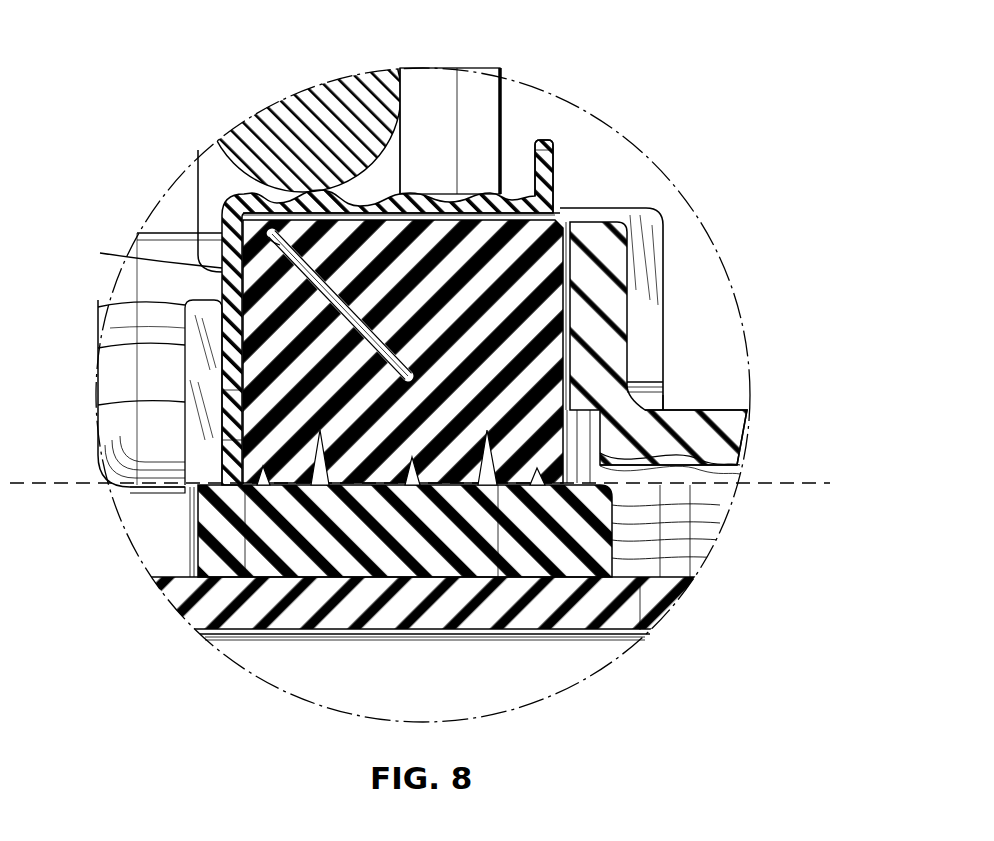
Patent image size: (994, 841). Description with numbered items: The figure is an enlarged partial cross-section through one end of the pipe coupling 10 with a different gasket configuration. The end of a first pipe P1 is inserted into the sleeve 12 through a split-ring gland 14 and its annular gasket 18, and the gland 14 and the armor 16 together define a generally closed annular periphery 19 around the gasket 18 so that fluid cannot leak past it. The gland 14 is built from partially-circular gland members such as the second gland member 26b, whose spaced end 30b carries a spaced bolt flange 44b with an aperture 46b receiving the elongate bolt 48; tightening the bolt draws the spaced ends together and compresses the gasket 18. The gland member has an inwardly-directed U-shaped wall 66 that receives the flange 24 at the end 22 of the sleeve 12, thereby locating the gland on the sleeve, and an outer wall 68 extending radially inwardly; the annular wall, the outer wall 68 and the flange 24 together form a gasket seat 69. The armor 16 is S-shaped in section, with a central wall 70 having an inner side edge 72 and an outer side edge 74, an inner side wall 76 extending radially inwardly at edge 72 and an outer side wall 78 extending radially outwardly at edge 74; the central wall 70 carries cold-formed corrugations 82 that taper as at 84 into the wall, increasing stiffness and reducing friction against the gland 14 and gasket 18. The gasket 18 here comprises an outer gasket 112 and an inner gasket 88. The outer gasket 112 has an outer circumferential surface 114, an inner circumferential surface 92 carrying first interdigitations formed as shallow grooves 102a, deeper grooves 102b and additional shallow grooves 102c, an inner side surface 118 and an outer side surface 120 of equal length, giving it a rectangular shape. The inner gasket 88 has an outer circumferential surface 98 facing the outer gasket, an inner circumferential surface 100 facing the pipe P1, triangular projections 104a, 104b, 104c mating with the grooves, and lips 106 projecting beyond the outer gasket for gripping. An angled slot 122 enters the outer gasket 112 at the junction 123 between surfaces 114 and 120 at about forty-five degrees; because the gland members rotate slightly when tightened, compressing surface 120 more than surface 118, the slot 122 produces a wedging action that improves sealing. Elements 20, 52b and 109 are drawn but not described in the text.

The pipe coupling 10 is at (118, 168).
The sleeve 12 is at (732, 405).
The split-ring gland 14 is at (128, 494).
The armor 16 is at (560, 150).
The annular gasket 18 is at (191, 610).
The closed annular periphery 19 is at (328, 215).
The housing wall 20 is at (738, 428).
The end of the sleeve 22 is at (640, 395).
The flange 24 is at (610, 312).
The second partially-circular gland member 26b is at (180, 450).
The spaced end 30b is at (183, 343).
The spaced bolt flange 44b is at (478, 95).
The aperture 46b is at (200, 178).
The elongate bolt 48 is at (300, 95).
The stud surface 52b is at (163, 368).
The U-shaped wall 66 is at (640, 207).
The outer wall 68 is at (183, 305).
The gasket seat 69 is at (272, 238).
The central wall 70 is at (362, 205).
The inner side edge 72 is at (533, 193).
The outer side edge 74 is at (235, 205).
The inner side wall 76 is at (545, 165).
The outer side wall 78 is at (222, 275).
The corrugations 82 is at (421, 193).
The taper 84 is at (508, 193).
The inner gasket 88 is at (208, 568).
The inner circumferential surface 92 is at (487, 470).
The outer circumferential surface 98 is at (605, 458).
The inner circumferential surface 100 is at (625, 632).
The shallow grooves 102a is at (538, 490).
The deeper grooves 102b is at (266, 490).
The additional shallow grooves 102c is at (413, 490).
The annular projection 104a is at (498, 580).
The annular projection 104b is at (245, 580).
The annular projection 104c is at (322, 482).
The lips 106 is at (640, 563).
The axis 109 is at (830, 483).
The outer gasket 112 is at (238, 413).
The outer circumferential surface 114 is at (473, 193).
The inner side surface 118 is at (630, 272).
The outer side surface 120 is at (220, 295).
The angled slot 122 is at (240, 242).
The junction 123 is at (285, 205).
The first pipe P1 is at (198, 636).